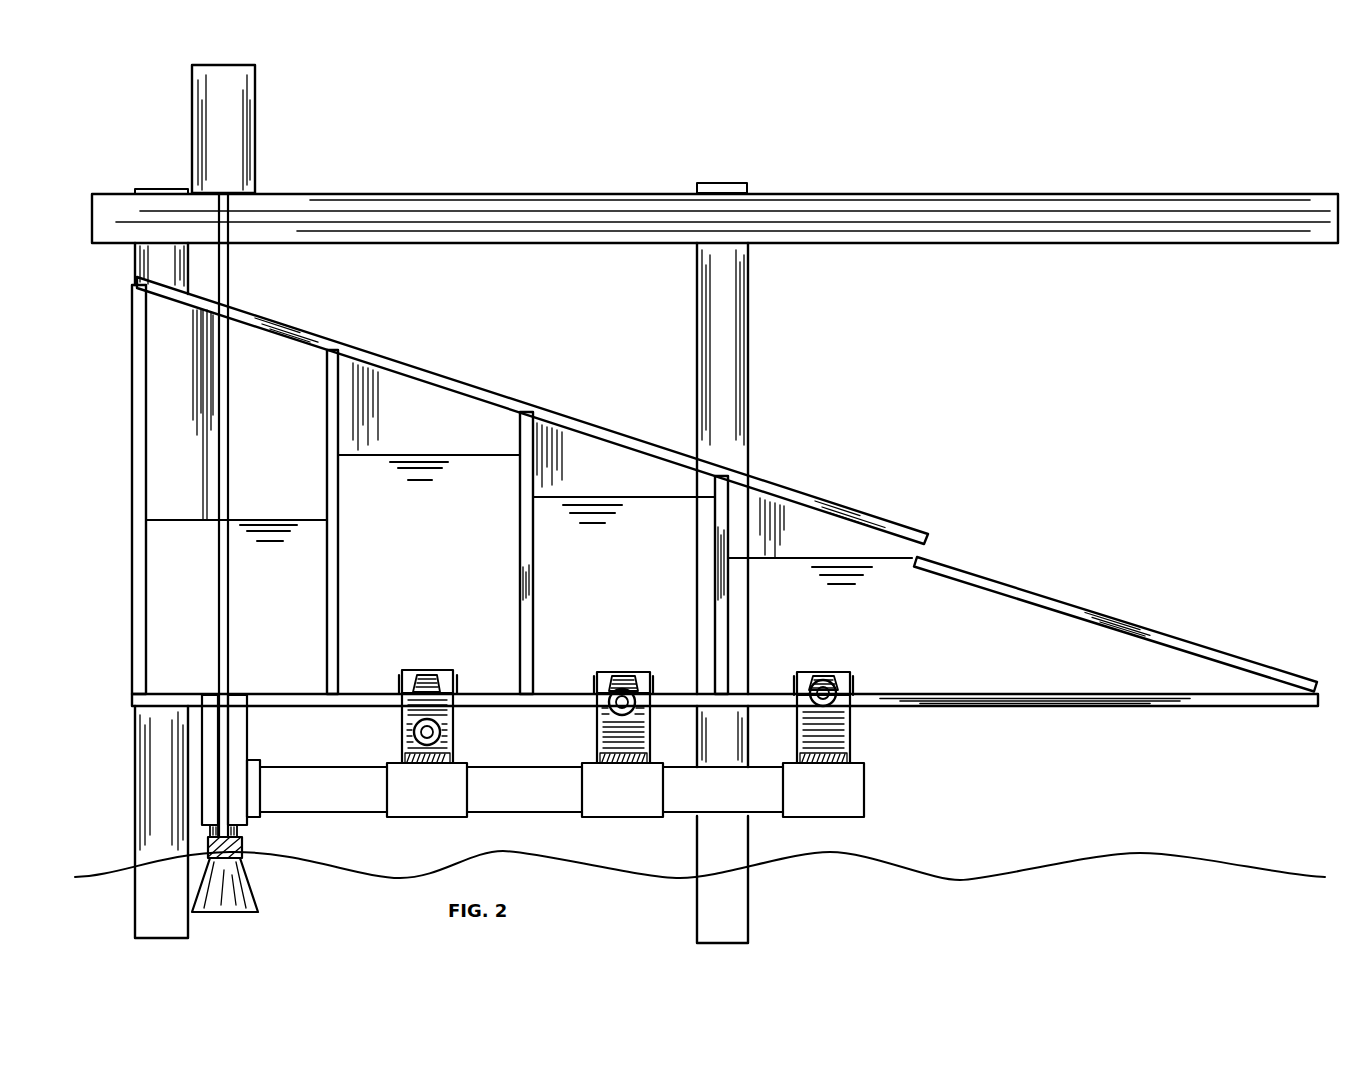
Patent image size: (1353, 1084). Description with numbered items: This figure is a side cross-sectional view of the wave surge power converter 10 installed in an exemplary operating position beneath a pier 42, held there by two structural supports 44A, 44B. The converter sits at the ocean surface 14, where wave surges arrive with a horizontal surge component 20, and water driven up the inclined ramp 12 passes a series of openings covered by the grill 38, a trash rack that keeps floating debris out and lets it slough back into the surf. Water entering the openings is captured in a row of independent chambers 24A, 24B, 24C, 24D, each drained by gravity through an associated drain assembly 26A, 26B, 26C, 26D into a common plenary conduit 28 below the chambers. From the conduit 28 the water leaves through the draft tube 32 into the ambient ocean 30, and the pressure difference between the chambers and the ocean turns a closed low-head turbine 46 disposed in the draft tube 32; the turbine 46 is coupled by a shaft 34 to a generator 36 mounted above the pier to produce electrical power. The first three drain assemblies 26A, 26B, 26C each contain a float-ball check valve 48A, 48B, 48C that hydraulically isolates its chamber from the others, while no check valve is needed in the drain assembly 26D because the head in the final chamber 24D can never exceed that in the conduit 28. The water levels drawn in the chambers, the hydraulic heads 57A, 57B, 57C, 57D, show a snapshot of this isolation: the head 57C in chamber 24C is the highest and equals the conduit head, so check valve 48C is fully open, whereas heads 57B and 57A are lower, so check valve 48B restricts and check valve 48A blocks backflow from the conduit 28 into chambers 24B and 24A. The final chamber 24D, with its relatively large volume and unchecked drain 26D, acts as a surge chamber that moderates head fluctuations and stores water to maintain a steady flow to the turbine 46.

The wave surge power converter 10 is at (901, 352).
The inclined ramp 12 is at (1050, 592).
The ocean surface 14 is at (1015, 872).
The horizontal surge component 20 is at (1143, 416).
The independent chamber 24A is at (785, 596).
The independent chamber 24B is at (623, 596).
The independent chamber 24C is at (438, 596).
The final chamber 24D is at (285, 596).
The drain assembly 26A is at (843, 732).
The drain assembly 26B is at (600, 732).
The drain assembly 26C is at (402, 732).
The drain assembly 26D is at (248, 730).
The plenary conduit 28 is at (532, 807).
The ambient ocean 30 is at (970, 923).
The draft tube 32 is at (232, 912).
The shaft 34 is at (231, 282).
The generator 36 is at (193, 118).
The grill 38 is at (459, 378).
The pier 42 is at (889, 194).
The structural support 44A is at (140, 808).
The structural support 44B is at (746, 312).
The closed low-head turbine 46 is at (243, 850).
The check valve 48A is at (805, 684).
The check valve 48B is at (612, 684).
The check valve 48C is at (410, 684).
The hydraulic head 57A is at (863, 547).
The hydraulic head 57B is at (640, 484).
The hydraulic head 57C is at (471, 444).
The hydraulic head 57D is at (316, 510).